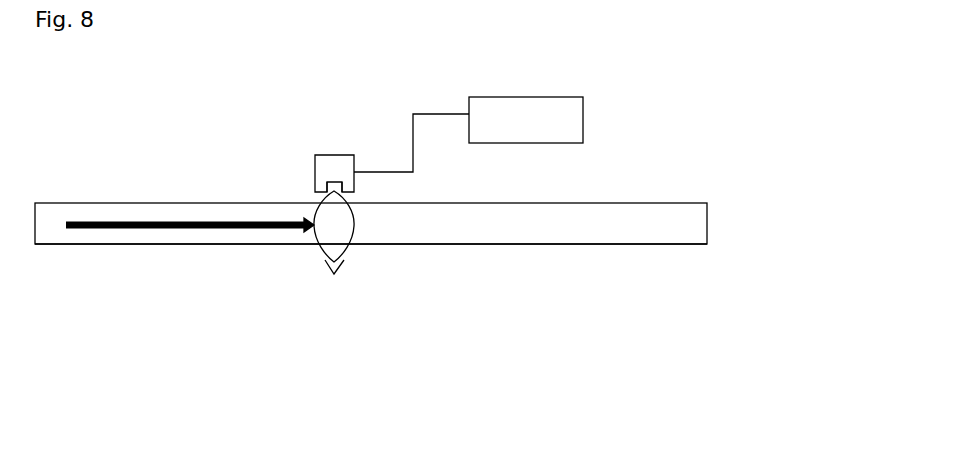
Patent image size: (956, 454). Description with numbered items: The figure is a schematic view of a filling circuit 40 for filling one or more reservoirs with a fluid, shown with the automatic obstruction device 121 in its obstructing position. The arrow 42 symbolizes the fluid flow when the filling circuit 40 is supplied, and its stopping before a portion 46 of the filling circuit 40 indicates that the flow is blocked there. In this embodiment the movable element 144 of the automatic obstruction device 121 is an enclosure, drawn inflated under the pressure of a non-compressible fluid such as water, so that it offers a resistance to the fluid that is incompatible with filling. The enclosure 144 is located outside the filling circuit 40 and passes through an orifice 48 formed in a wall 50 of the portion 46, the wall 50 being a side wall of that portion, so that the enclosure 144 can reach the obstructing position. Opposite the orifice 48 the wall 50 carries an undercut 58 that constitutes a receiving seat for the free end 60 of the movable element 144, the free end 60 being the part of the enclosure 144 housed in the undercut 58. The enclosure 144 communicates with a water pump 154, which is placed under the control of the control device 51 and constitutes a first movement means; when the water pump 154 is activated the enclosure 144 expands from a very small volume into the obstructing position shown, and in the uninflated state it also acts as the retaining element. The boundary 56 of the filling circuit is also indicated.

The filling circuit 40 is at (204, 178).
The arrow 42 is at (267, 220).
The portion of the filling circuit 46 is at (327, 213).
The orifice 48 is at (352, 191).
The wall 50 is at (154, 200).
The control device 51 is at (590, 128).
The channel wall 56 is at (212, 248).
The undercut 58 is at (325, 260).
The free end 60 is at (342, 261).
The automatic obstruction device 121 is at (311, 189).
The movable element 144 is at (348, 243).
The water pump 154 is at (333, 162).